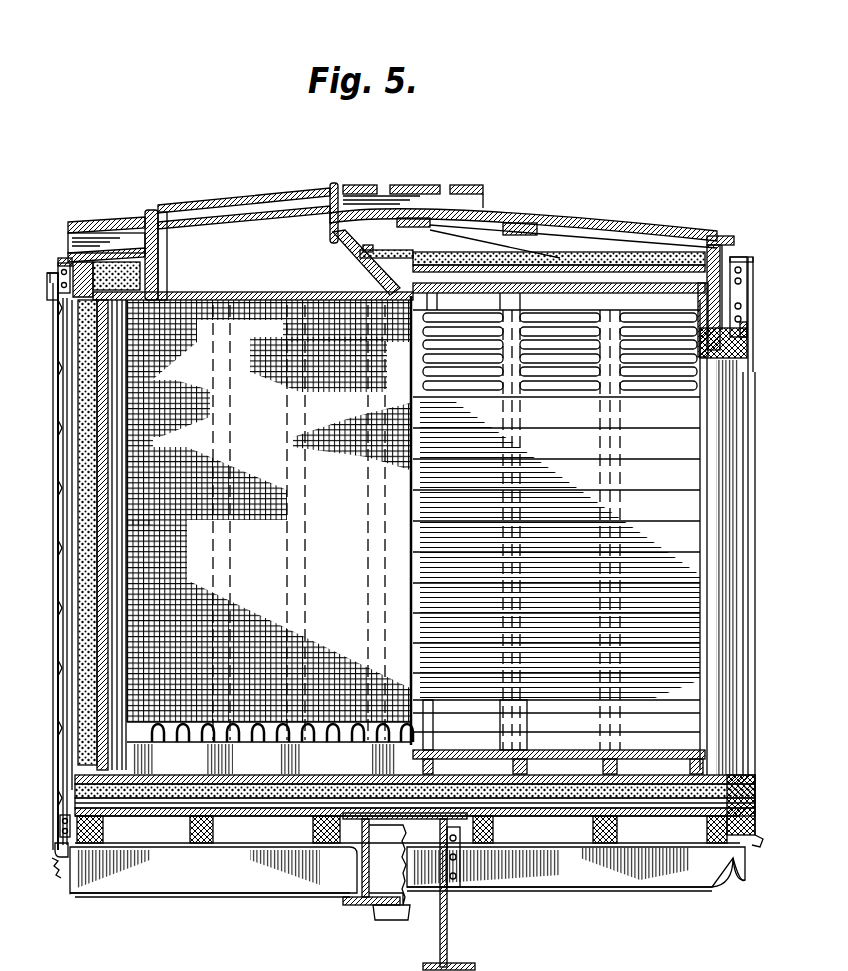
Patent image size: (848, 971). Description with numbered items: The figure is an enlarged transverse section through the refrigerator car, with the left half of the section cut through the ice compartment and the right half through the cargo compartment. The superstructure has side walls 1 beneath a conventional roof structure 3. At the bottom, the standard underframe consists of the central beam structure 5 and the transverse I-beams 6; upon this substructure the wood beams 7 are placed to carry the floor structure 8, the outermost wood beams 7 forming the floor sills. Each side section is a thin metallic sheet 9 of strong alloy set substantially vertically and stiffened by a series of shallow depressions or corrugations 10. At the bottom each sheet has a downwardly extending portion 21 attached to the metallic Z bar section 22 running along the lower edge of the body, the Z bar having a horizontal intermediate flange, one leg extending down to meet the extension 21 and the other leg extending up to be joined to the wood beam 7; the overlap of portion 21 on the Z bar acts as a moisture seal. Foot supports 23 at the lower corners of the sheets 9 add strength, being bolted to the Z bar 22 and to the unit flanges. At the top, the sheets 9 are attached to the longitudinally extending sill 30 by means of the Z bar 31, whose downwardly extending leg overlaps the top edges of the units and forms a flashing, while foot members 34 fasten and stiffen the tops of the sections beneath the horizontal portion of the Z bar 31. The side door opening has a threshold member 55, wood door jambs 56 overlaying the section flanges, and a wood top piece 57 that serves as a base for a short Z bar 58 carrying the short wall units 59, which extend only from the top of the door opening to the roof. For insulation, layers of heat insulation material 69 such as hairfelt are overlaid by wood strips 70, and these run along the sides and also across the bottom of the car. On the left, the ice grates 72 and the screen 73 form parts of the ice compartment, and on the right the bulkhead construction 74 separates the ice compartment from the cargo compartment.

The side walls 1 is at (56, 462).
The roof structure 3 is at (545, 216).
The central beam structure 5 is at (360, 864).
The transverse I-beams 6 is at (176, 882).
The wood beams 7 is at (190, 822).
The floor structure 8 is at (230, 822).
The thin metallic sheet 9 is at (55, 403).
The shallow depressions or corrugations 10 is at (60, 516).
The downwardly extending portion 21 is at (58, 852).
The Z bar section 22 is at (66, 870).
The foot support 23 is at (60, 826).
The top longitudinally extending sill 30 is at (86, 262).
The Z bar 31 is at (49, 283).
The foot member 34 is at (62, 270).
The threshold member 55 is at (752, 787).
The wood door jambs 56 is at (746, 463).
The wood top piece 57 is at (747, 330).
The short Z bar 58 is at (752, 345).
The short wall units 59 is at (755, 284).
The layers of heat insulation material 69 is at (90, 624).
The wood strips 70 is at (104, 648).
The ice grates 72 is at (256, 736).
The screen 73 is at (260, 428).
The bulkhead construction 74 is at (578, 456).